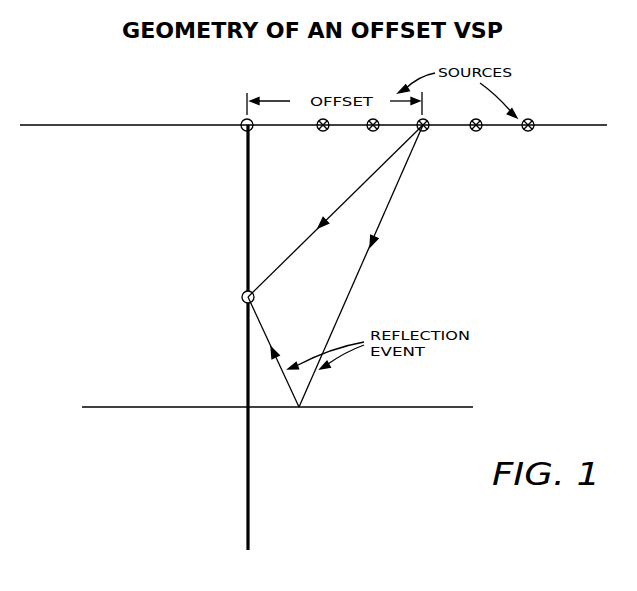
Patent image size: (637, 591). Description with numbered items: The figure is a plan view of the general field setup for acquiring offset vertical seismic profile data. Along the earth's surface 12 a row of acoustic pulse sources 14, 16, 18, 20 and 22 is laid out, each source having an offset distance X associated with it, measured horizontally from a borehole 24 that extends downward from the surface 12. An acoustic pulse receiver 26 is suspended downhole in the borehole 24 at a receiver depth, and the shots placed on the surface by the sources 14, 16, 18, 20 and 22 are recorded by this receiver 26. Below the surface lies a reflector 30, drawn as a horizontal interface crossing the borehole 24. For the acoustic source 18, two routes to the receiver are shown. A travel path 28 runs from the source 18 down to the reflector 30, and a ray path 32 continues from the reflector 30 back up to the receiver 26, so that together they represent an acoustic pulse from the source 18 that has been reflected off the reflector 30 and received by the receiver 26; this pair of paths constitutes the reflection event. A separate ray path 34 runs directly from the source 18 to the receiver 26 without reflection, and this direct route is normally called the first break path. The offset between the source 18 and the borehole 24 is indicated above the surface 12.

The surface 12 is at (46, 124).
The source 14 is at (321, 133).
The source 16 is at (370, 132).
The source 18 is at (428, 132).
The source 20 is at (478, 132).
The source 22 is at (532, 132).
The borehole 24 is at (246, 182).
The receiver 26 is at (245, 291).
The downgoing ray path 28 is at (385, 218).
The reflector 30 is at (376, 409).
The reflected ray path 32 is at (269, 332).
The first break ray path 34 is at (298, 248).